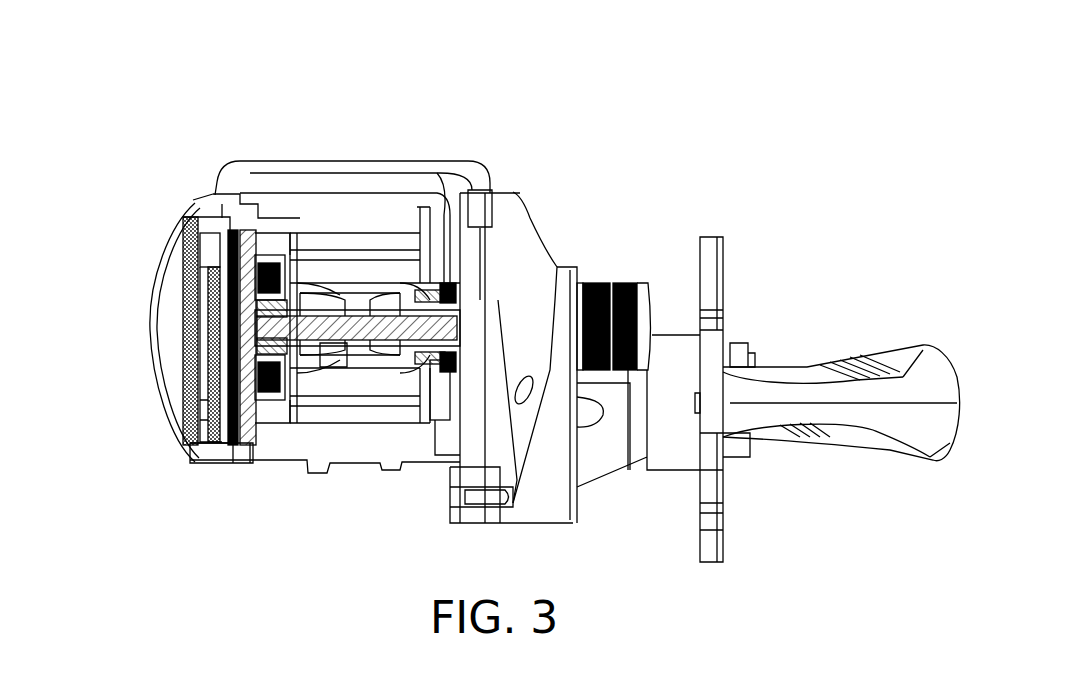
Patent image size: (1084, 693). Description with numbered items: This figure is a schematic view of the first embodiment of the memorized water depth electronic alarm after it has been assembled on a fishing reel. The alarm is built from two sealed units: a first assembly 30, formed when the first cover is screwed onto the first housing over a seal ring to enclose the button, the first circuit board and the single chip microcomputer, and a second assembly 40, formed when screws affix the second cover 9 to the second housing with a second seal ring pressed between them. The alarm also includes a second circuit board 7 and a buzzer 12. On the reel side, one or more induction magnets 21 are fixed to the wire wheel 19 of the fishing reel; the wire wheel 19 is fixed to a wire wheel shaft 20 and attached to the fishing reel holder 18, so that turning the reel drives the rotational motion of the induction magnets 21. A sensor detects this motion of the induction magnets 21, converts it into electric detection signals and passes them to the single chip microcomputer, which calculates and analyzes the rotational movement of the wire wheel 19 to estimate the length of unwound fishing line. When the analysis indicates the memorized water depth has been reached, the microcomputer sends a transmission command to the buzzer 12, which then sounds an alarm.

The first assembly 30 is at (351, 160).
The second assembly 40 is at (188, 307).
The buzzer 12 is at (213, 320).
The second cover 9 is at (192, 463).
The second circuit board 7 is at (234, 445).
The induction magnets 21 is at (266, 445).
The fishing reel holder 18 is at (296, 462).
The wire wheel 19 is at (345, 370).
The wire wheel shaft 20 is at (389, 340).